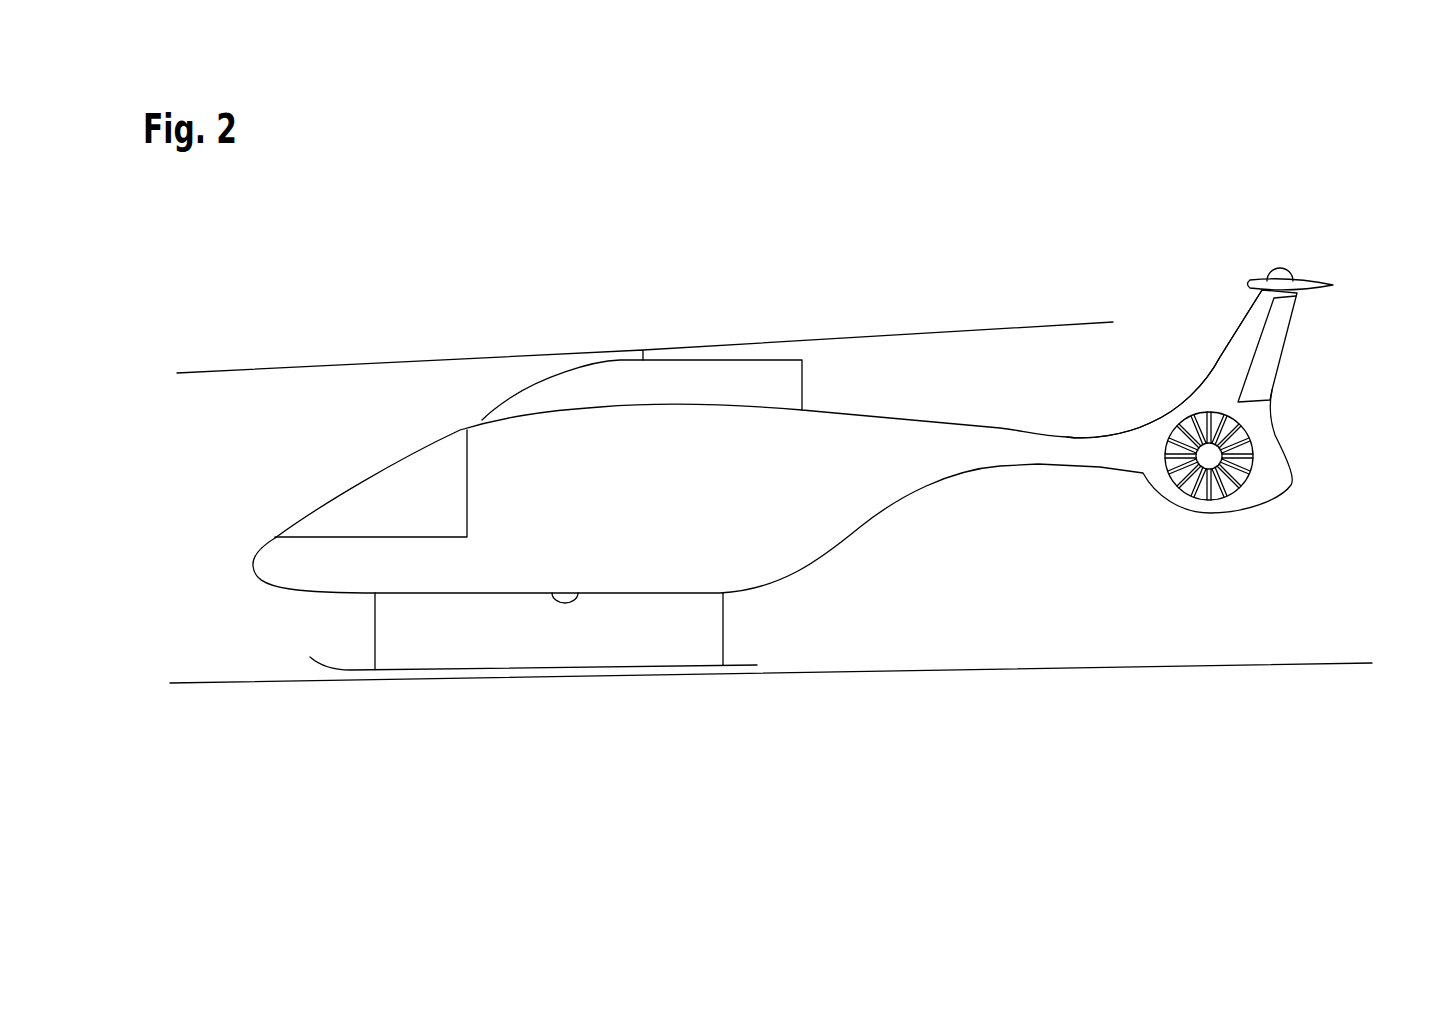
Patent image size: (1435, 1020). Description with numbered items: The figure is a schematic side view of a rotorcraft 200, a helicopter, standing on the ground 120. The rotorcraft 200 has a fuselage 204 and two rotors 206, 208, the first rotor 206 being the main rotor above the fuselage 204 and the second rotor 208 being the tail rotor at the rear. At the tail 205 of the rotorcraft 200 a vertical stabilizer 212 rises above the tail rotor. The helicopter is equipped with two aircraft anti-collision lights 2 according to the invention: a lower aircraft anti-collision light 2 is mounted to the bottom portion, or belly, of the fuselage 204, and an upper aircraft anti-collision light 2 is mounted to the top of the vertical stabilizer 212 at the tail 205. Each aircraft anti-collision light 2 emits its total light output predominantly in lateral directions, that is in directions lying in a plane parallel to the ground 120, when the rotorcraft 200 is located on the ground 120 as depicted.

The aircraft anti-collision light 2 is at (563, 625).
The ground 120 is at (1052, 667).
The rotorcraft 200 is at (455, 300).
The fuselage 204 is at (668, 557).
The tail 205 is at (1312, 360).
The rotor 206 is at (1065, 285).
The rotor 208 is at (1254, 512).
The vertical stabilizer 212 is at (1212, 303).